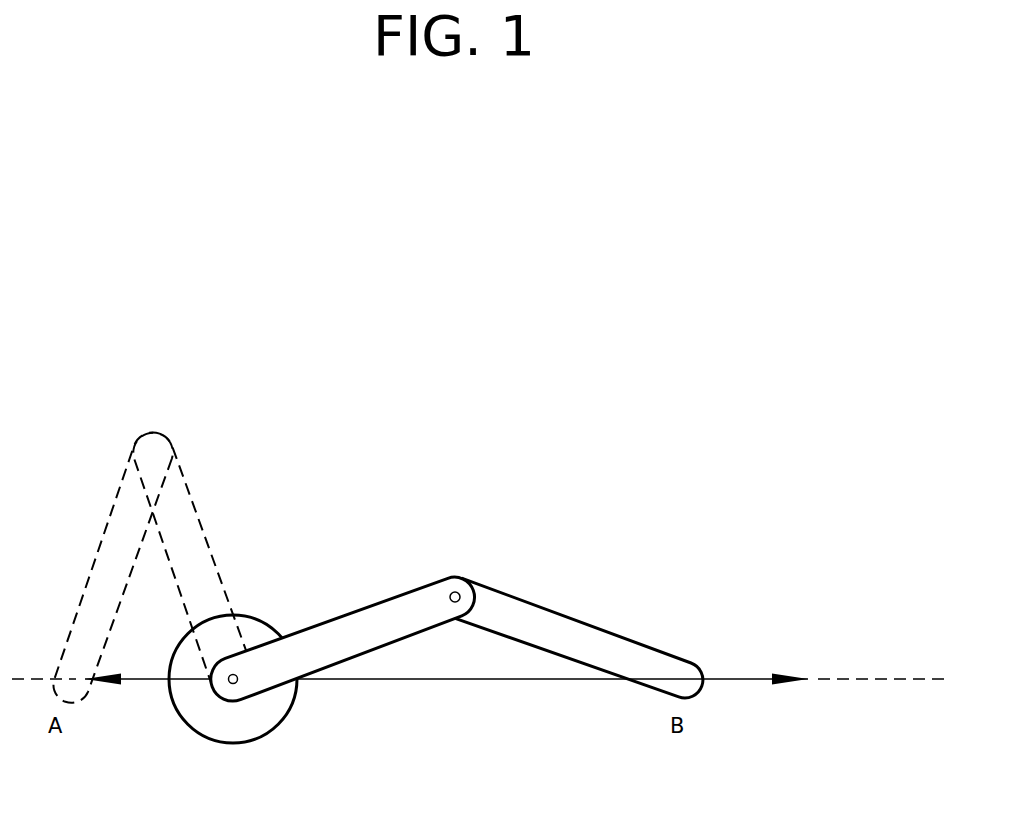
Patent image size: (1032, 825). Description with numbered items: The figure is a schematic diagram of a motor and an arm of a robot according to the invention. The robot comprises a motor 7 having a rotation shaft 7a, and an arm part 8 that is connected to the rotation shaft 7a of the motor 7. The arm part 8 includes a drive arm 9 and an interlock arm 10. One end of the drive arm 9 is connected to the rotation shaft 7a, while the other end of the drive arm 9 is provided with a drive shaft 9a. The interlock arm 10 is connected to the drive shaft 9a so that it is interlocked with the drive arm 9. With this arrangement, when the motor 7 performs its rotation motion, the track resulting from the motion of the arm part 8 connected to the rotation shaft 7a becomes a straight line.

The motor 7 is at (277, 715).
The rotation shaft 7a is at (217, 690).
The arm part 8 is at (457, 593).
The drive arm 9 is at (343, 616).
The drive shaft 9a is at (451, 605).
The interlock arm 10 is at (498, 618).